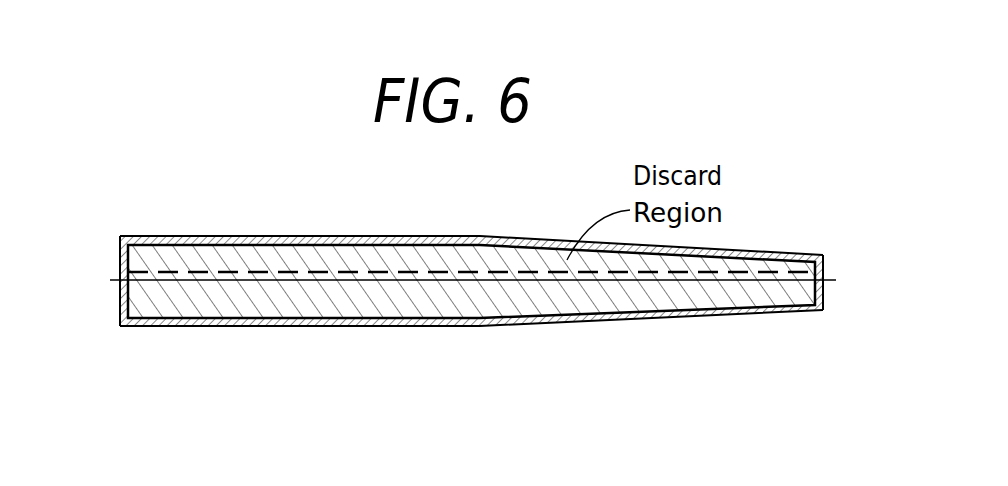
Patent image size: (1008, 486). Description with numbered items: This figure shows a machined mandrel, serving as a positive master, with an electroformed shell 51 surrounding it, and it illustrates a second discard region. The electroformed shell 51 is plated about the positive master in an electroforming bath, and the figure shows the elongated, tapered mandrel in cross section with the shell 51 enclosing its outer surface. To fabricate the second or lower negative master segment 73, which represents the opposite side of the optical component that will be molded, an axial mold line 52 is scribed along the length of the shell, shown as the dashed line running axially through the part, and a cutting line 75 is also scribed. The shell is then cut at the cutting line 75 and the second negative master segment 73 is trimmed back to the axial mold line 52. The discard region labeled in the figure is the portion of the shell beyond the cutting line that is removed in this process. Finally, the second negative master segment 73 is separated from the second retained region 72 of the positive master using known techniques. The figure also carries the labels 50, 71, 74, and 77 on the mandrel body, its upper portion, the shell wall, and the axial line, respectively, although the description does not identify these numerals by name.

The tapered body 50 is at (625, 353).
The electroformed shell 51 is at (149, 329).
The axial mold line 52 is at (321, 282).
The upper core portion 71 is at (458, 252).
The second retained region 72 is at (399, 307).
The second negative master segment 73 is at (283, 327).
The top wall 74 is at (236, 236).
The cutting line 75 is at (171, 272).
The central axis 77 is at (120, 272).